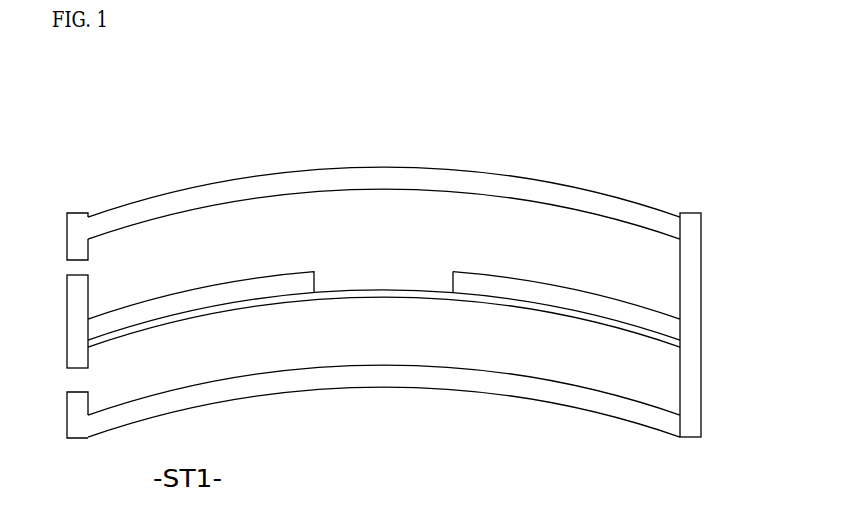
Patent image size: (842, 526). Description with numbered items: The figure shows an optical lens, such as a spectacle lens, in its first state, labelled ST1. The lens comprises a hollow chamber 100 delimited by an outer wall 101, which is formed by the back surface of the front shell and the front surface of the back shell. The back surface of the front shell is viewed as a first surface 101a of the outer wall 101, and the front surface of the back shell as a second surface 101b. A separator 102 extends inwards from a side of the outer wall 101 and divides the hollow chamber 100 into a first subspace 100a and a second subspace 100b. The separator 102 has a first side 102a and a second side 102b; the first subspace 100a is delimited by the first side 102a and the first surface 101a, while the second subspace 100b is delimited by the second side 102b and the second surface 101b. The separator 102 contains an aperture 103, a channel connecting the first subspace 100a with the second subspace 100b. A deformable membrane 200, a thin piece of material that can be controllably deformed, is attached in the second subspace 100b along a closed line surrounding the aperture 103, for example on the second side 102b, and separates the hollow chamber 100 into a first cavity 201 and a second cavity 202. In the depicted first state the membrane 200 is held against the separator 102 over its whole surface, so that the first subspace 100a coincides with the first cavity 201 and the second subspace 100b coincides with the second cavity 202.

The hollow chamber 100 is at (412, 274).
The first subspace 100a is at (366, 206).
The first cavity 201 is at (150, 246).
The second subspace 100b is at (384, 396).
The second cavity 202 is at (628, 382).
The outer wall 101 is at (693, 267).
The first surface 101a is at (298, 193).
The second surface 101b is at (153, 392).
The separator 102 is at (541, 280).
The first side 102a is at (492, 270).
The second side 102b is at (475, 295).
The aperture 103 is at (380, 274).
The deformable membrane 200 is at (328, 287).